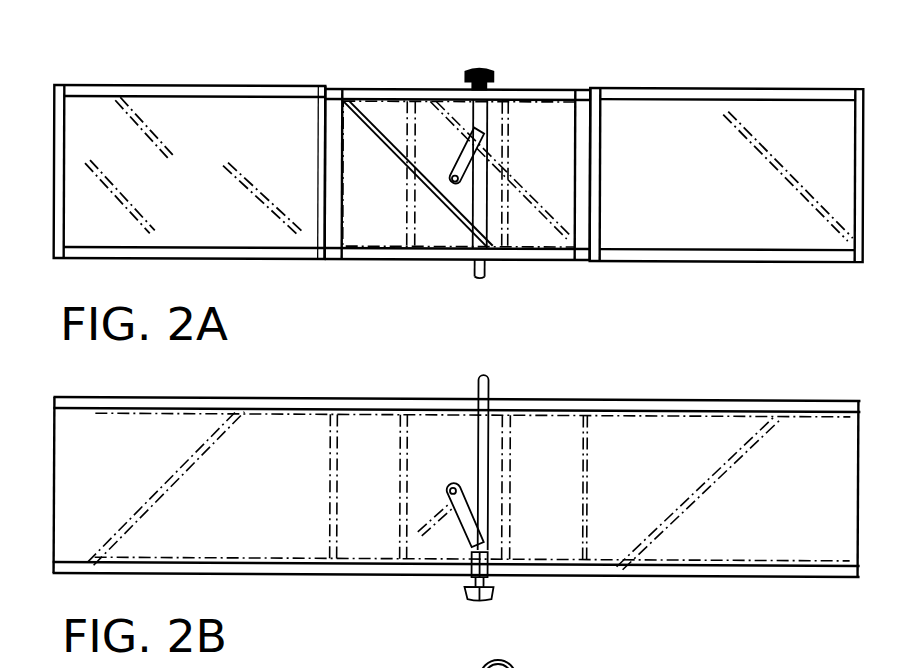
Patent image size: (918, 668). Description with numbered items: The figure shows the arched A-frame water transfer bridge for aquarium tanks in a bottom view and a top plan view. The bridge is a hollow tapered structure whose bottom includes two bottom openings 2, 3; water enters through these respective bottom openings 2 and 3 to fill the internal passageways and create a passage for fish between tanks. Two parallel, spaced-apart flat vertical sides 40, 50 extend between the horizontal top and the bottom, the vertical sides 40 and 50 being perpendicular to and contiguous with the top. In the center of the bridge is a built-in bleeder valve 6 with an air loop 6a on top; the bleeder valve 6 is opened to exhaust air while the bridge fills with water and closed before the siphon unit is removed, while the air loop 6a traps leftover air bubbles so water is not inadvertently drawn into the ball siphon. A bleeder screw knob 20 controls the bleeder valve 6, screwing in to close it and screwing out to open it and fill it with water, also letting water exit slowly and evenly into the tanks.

In FIG. 2A, the bottom opening 2 is at (250, 153).
In FIG. 2A, the bottom opening 3 is at (626, 152).
In FIG. 2A, the flat vertical side 40 is at (317, 87).
In FIG. 2B, the flat vertical side 40 is at (684, 577).
In FIG. 2A, the flat vertical side 50 is at (301, 259).
In FIG. 2B, the flat vertical side 50 is at (770, 398).
In FIG. 2B, the bleeder valve 6 is at (468, 557).
In FIG. 2B, the air loop 6a is at (452, 486).
In FIG. 2B, the bleeder screw knob 20 is at (496, 593).